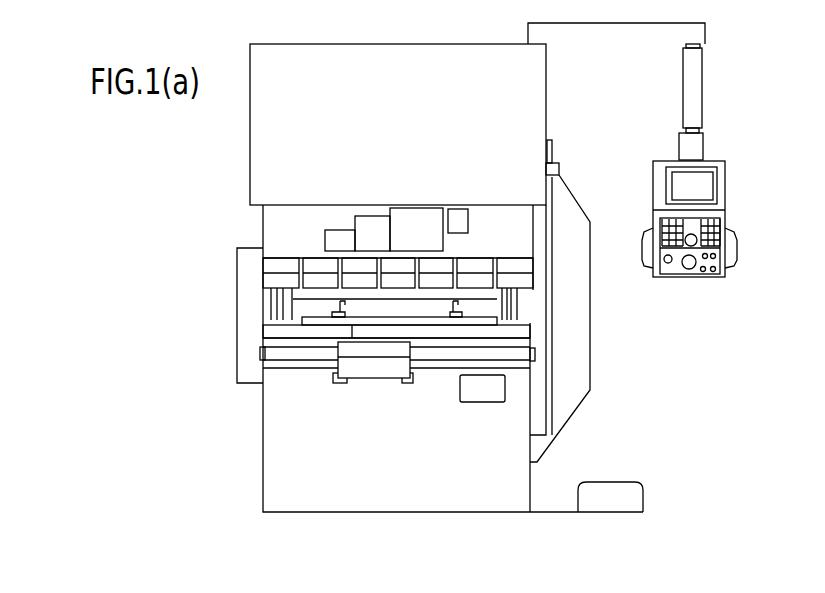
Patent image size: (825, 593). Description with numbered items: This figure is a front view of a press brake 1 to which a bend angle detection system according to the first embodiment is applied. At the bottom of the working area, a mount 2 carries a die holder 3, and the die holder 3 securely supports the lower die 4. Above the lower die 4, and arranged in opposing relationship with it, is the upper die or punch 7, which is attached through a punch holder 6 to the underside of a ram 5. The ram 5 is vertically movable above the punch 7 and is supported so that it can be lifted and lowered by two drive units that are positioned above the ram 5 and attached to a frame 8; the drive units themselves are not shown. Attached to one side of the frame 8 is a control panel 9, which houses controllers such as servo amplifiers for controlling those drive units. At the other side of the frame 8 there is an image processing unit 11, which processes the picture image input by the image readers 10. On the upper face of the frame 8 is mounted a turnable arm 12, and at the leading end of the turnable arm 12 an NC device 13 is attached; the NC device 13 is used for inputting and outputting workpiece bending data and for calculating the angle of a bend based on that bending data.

The press brake 1 is at (433, 34).
The mount 2 is at (268, 342).
The die holder 3 is at (268, 330).
The lower die 4 is at (266, 320).
The ram 5 is at (273, 228).
The punch holder 6 is at (533, 282).
The upper die 7 is at (517, 298).
The frame 8 is at (520, 166).
The control panel 9 is at (568, 387).
The image readers 10 is at (375, 370).
The image processing unit 11 is at (247, 367).
The turnable arm 12 is at (697, 93).
The NC device 13 is at (728, 193).